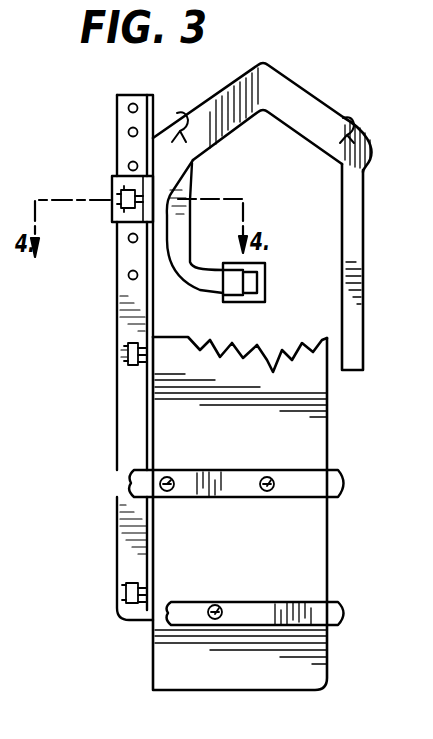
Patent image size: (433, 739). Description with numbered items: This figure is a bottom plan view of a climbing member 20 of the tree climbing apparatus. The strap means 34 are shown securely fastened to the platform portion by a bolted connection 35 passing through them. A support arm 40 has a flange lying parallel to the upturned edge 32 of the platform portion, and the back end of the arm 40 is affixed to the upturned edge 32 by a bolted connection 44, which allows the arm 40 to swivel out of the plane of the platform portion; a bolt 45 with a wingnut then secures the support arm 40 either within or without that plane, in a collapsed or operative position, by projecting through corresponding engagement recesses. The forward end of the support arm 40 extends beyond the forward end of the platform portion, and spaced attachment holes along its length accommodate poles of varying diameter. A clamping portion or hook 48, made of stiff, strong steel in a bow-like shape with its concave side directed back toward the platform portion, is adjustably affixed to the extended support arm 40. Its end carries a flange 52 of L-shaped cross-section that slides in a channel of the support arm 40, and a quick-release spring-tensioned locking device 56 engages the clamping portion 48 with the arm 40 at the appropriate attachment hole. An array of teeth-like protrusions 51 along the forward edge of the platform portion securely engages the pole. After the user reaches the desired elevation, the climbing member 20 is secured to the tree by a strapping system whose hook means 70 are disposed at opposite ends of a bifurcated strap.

The climbing member 20 is at (64, 538).
The upturned edge 32 is at (150, 448).
The strap means 34 is at (297, 488).
The bolted connection 35 is at (268, 478).
The support arm 40 is at (132, 413).
The bolted connection 44 is at (126, 590).
The bolt 45 is at (127, 345).
The clamping portion 48 is at (295, 88).
The teeth-like protrusions 51 is at (282, 356).
The flange 52 is at (118, 176).
The quick-release spring-tensioned locking device 56 is at (112, 190).
The hook means 70 is at (182, 113).